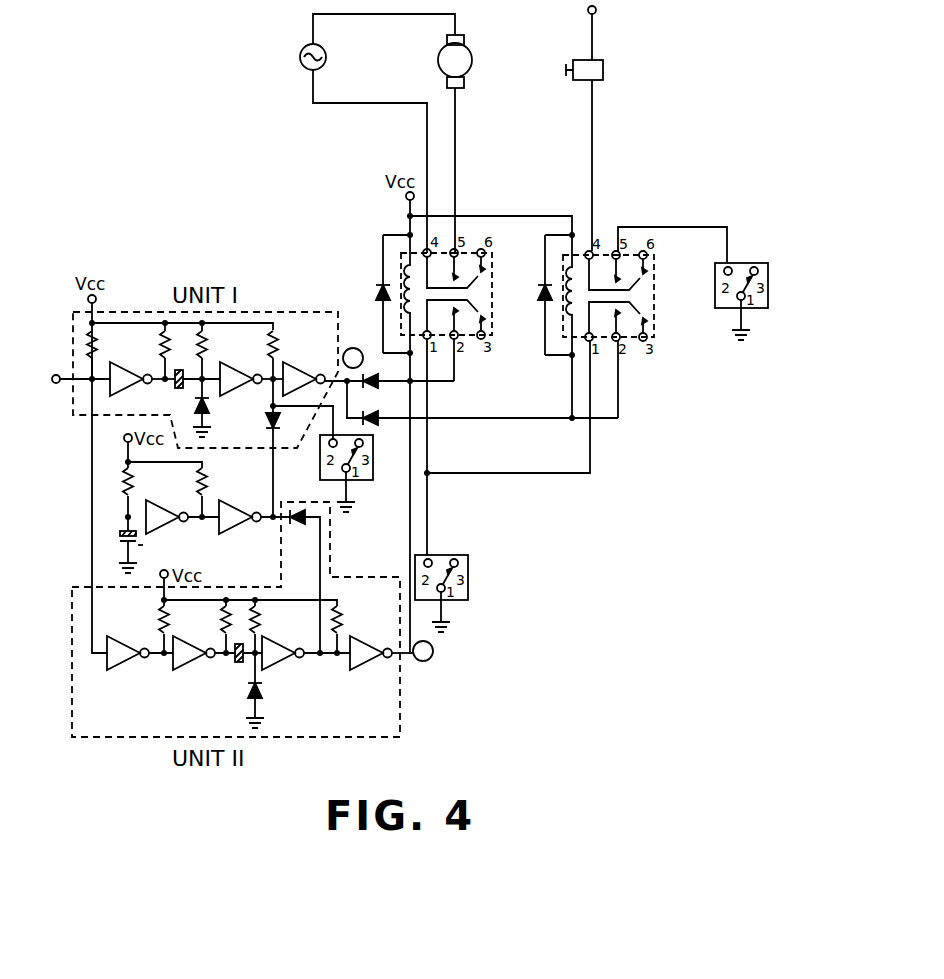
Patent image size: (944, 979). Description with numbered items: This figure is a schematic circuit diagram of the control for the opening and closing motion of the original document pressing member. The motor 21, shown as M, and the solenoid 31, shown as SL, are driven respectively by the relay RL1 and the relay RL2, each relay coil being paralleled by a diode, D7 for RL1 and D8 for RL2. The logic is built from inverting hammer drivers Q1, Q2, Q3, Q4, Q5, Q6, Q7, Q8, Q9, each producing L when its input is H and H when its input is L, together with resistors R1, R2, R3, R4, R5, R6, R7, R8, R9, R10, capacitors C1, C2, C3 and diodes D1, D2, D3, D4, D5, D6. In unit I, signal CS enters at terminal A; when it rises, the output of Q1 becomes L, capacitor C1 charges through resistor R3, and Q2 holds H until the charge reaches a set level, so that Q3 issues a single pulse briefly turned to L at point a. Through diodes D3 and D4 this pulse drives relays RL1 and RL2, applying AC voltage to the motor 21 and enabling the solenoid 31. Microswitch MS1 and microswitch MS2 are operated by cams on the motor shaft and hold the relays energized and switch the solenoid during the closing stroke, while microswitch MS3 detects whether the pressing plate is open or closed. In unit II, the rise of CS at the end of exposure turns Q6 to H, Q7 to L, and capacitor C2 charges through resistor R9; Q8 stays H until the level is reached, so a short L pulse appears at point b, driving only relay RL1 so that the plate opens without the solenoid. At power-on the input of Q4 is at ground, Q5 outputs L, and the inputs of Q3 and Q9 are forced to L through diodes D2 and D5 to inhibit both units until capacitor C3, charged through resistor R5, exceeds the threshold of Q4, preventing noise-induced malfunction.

The motor 21 is at (473, 57).
The solenoid 31 is at (604, 72).
The resistor R1 is at (107, 353).
The resistor R2 is at (160, 345).
The resistor R3 is at (208, 349).
The resistor R4 is at (280, 348).
The resistor R5 is at (136, 483).
The resistor R6 is at (210, 479).
The resistor R7 is at (160, 623).
The resistor R8 is at (222, 623).
The resistor R9 is at (261, 622).
The resistor R10 is at (343, 624).
The capacitor C1 is at (176, 390).
The capacitor C2 is at (240, 666).
The capacitor C3 is at (139, 539).
The hammer driver Q1 is at (137, 393).
The hammer driver Q2 is at (232, 362).
The hammer driver Q3 is at (297, 362).
The hammer driver Q4 is at (165, 528).
The hammer driver Q5 is at (240, 530).
The hammer driver Q6 is at (125, 668).
The hammer driver Q7 is at (185, 668).
The hammer driver Q8 is at (272, 668).
The hammer driver Q9 is at (366, 668).
The diode D1 is at (208, 404).
The diode D2 is at (266, 422).
The diode D3 is at (375, 370).
The diode D4 is at (362, 412).
The diode D5 is at (296, 526).
The diode D6 is at (262, 690).
The diode D7 is at (376, 291).
The diode D8 is at (541, 288).
The relay RL1 is at (488, 303).
The relay RL2 is at (652, 305).
The microswitch MS1 is at (456, 553).
The microswitch MS2 is at (713, 292).
The microswitch MS3 is at (372, 478).
The pulse output point a is at (353, 358).
The pulse output point b is at (412, 651).
The input terminal A is at (51, 369).